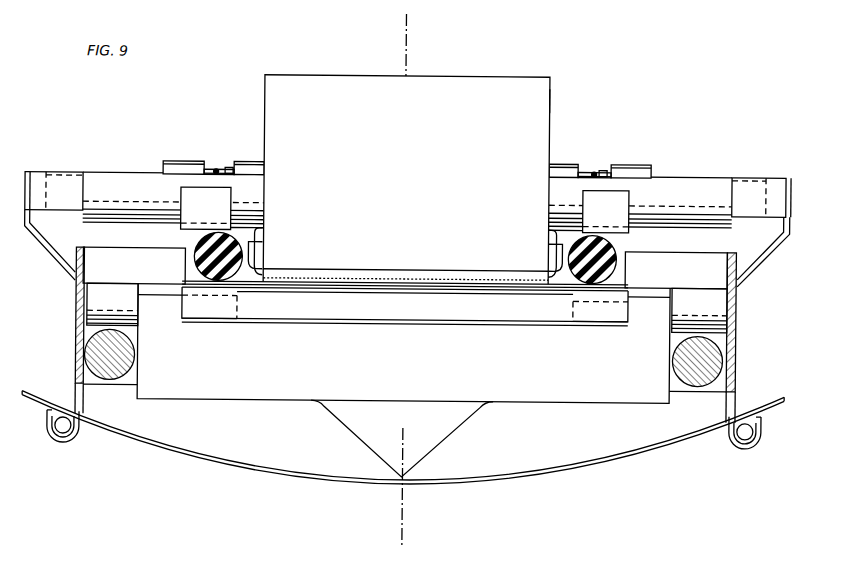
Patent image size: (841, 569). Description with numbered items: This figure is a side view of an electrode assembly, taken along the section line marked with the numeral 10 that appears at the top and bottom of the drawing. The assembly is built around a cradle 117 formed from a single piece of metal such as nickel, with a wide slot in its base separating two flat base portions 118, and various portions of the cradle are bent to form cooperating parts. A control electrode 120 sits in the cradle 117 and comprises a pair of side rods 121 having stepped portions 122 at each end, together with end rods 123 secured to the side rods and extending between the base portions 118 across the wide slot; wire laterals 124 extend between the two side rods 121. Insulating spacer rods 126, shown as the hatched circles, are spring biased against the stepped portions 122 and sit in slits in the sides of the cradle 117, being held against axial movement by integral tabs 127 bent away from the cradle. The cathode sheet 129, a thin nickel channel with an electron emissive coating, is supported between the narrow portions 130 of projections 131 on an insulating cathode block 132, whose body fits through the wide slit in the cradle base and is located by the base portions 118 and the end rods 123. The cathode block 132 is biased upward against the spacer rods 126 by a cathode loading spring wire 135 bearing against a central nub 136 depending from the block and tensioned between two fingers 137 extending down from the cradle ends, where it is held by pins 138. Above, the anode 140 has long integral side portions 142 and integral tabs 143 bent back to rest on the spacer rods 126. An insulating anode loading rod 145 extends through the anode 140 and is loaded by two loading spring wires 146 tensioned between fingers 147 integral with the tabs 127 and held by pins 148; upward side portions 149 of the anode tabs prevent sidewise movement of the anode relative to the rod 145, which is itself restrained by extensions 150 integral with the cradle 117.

The figure 10 is at (410, 24).
The cradle 117 is at (78, 330).
The base portions 118 is at (95, 387).
The control electrode 120 is at (712, 308).
The side rods 121 is at (90, 302).
The stepped portions 122 is at (140, 282).
The end rods 123 is at (100, 355).
The wire laterals 124 is at (331, 280).
The insulating spacer rods 126 is at (238, 247).
The integral tabs 127 is at (190, 241).
The cathode sheet 129 is at (312, 312).
The narrow portions 130 is at (206, 312).
The projections 131 is at (147, 301).
The insulating cathode block 132 is at (270, 388).
The cathode loading spring wire 135 is at (527, 478).
The central nub 136 is at (447, 418).
The fingers 137 is at (72, 442).
The pins 138 is at (62, 430).
The anode 140 is at (437, 156).
The side portions 142 is at (540, 100).
The integral tabs 143 is at (244, 223).
The insulating anode loading rod 145 is at (700, 184).
The loading spring wires 146 is at (228, 169).
The fingers 147 is at (170, 163).
The pins 148 is at (210, 170).
The upward side portions 149 is at (180, 194).
The extension 150 is at (39, 173).